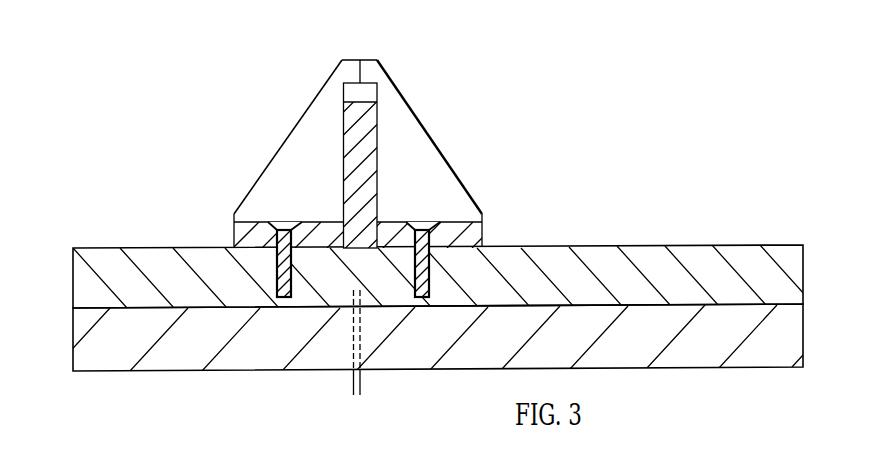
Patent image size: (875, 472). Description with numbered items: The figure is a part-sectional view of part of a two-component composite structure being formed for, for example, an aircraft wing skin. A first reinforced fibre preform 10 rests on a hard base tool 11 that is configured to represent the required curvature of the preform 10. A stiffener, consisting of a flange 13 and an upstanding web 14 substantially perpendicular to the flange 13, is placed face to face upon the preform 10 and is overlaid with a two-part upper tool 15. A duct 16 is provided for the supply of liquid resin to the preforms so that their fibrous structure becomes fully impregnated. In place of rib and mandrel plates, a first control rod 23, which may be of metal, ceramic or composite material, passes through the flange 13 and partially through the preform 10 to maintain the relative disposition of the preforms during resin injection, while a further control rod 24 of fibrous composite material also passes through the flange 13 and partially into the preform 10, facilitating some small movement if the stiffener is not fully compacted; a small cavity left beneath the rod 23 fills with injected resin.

The first reinforced fibre preform 10 is at (775, 250).
The hard base tool 11 is at (792, 342).
The flange 13 is at (242, 238).
The upstanding web 14 is at (370, 126).
The two-part upper tool 15 is at (282, 163).
The duct 16 is at (363, 378).
The first control rod 23 is at (430, 272).
The further control rod 24 is at (298, 240).